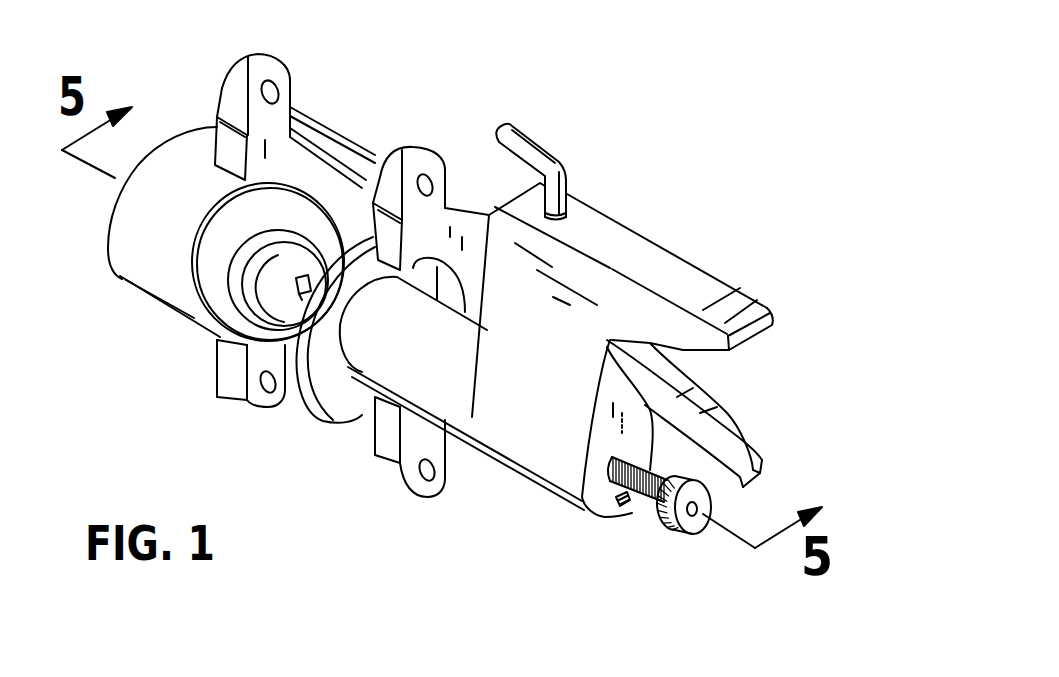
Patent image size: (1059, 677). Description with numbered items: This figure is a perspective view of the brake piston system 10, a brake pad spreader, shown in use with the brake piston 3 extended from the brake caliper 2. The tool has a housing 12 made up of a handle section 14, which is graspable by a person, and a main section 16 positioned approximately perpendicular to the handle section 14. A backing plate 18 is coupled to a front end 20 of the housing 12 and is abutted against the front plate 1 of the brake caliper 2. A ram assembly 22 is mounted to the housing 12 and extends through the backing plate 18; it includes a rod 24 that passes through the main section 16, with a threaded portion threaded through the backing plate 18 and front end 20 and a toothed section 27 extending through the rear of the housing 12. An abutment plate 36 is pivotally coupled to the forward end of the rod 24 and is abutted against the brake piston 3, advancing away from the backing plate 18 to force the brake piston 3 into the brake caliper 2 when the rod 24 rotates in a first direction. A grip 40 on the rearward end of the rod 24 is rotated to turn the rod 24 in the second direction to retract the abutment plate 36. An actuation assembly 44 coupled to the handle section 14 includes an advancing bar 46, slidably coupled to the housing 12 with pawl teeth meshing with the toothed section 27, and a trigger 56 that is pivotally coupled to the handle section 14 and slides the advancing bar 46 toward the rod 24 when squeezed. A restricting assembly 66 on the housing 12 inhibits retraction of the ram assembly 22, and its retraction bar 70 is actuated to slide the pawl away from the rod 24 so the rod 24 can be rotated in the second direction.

The front plate 1 is at (463, 210).
The brake caliper 2 is at (290, 83).
The brake piston 3 is at (148, 276).
The brake piston system 10 is at (672, 44).
The housing 12 is at (768, 312).
The handle section 14 is at (606, 296).
The main section 16 is at (512, 437).
The backing plate 18 is at (313, 413).
The front end 20 is at (345, 394).
The ram assembly 22 is at (688, 536).
The rod 24 is at (262, 398).
The toothed section 27 is at (650, 507).
The abutment plate 36 is at (255, 292).
The grip 40 is at (698, 511).
The actuation assembly 44 is at (755, 440).
The advancing bar 46 is at (547, 116).
The trigger 56 is at (723, 422).
The restricting assembly 66 is at (622, 508).
The retraction bar 70 is at (605, 512).